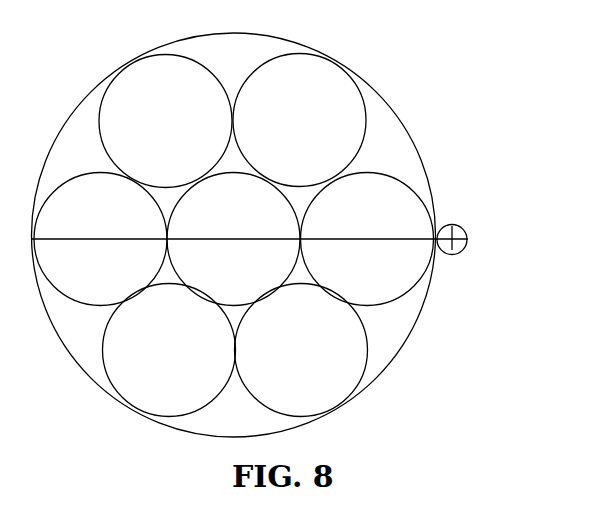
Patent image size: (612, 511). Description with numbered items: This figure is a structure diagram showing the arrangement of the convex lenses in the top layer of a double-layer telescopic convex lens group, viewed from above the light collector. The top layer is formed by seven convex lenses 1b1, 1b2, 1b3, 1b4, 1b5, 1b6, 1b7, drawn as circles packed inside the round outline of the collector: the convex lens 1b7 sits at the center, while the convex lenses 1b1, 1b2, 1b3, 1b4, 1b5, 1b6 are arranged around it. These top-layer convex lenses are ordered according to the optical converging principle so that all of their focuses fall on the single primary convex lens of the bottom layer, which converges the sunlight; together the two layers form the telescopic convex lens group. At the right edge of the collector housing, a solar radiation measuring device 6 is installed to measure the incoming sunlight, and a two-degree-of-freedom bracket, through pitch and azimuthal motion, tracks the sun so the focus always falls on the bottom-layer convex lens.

The convex lens 1b1 is at (100, 239).
The convex lens 1b2 is at (165, 121).
The convex lens 1b3 is at (299, 120).
The convex lens 1b4 is at (367, 239).
The convex lens 1b5 is at (301, 350).
The convex lens 1b6 is at (169, 350).
The convex lens 1b7 is at (233, 239).
The solar radiation measuring device 6 is at (462, 229).